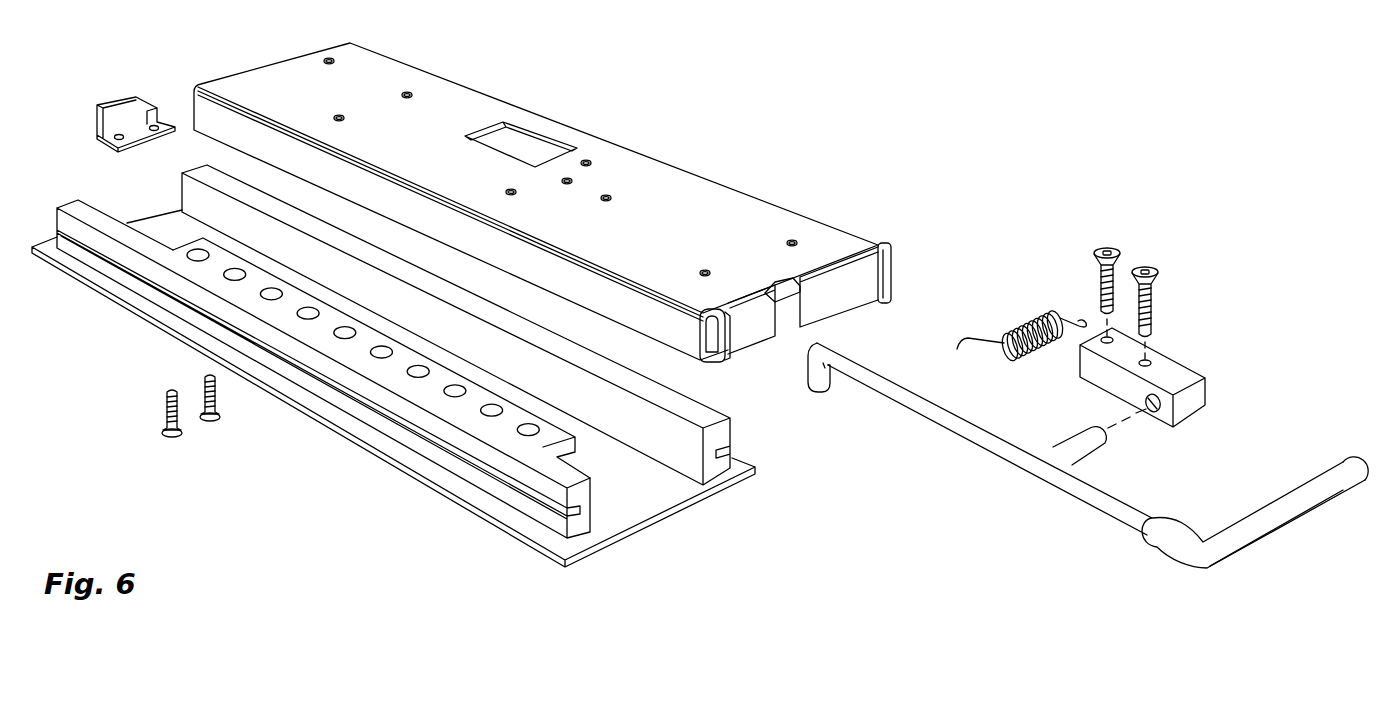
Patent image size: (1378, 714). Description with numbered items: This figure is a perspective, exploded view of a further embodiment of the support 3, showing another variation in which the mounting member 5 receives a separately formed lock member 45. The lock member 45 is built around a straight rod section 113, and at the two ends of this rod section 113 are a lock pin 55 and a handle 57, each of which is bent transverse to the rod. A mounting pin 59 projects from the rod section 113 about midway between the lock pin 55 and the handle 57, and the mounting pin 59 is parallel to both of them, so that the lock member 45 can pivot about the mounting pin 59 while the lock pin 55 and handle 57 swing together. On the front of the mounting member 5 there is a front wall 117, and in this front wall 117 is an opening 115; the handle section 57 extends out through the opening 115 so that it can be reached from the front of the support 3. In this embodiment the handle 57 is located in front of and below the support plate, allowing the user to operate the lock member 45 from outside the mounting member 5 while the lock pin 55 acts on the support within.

The support 3 is at (148, 347).
The mounting member 5 is at (604, 202).
The opening 115 is at (804, 309).
The front wall 117 is at (893, 300).
The lock member 45 is at (1088, 449).
The lock pin 55 is at (823, 390).
The straight rod section 113 is at (1088, 496).
The mounting pin 59 is at (1090, 449).
The handle section 57 is at (1242, 543).